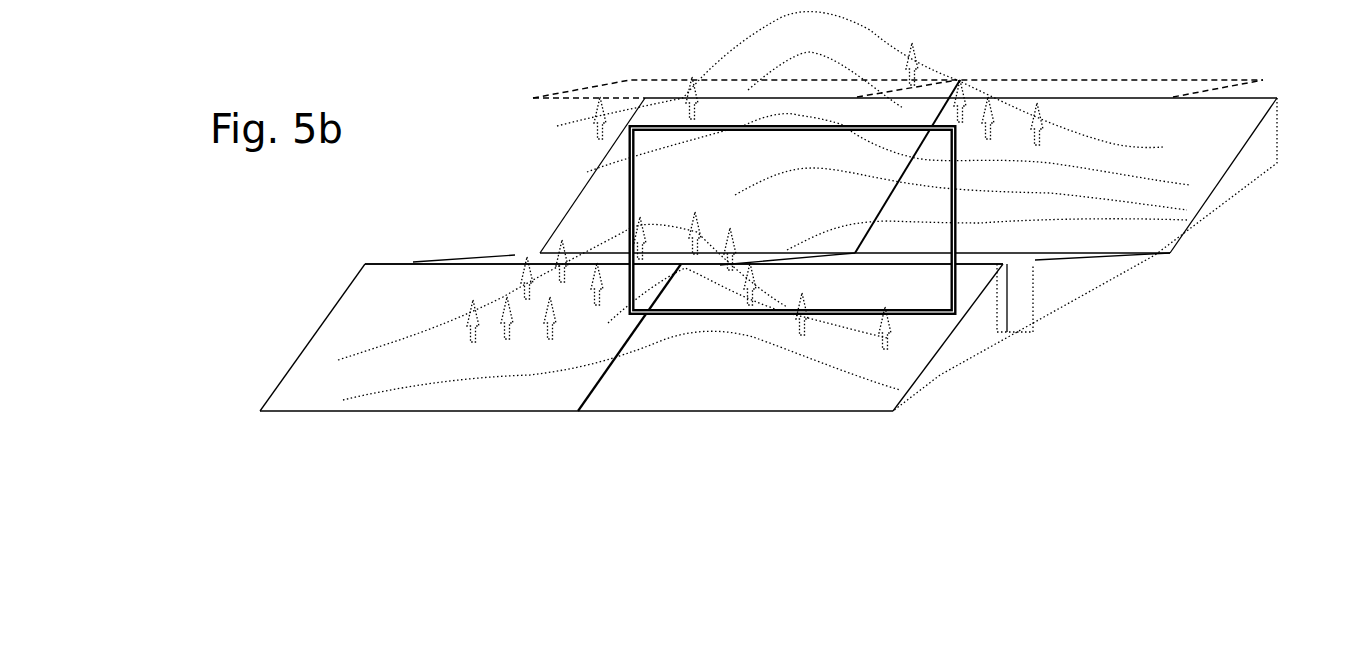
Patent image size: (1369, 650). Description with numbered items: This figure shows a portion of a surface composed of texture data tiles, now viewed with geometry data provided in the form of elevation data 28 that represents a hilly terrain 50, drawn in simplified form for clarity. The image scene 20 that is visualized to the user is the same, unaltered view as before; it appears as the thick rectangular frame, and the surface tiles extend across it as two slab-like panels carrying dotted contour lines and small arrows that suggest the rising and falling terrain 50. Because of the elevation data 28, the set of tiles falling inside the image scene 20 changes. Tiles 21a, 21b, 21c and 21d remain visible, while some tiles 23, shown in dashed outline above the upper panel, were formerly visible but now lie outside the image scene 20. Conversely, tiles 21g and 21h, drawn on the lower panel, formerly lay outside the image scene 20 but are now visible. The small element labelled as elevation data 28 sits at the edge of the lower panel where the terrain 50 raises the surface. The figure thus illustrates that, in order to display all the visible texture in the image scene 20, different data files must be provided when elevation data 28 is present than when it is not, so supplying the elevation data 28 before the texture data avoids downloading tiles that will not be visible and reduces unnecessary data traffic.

The image scene 20 is at (685, 315).
The texture data tile 21a is at (513, 257).
The texture data tile 21b is at (1035, 260).
The texture data tile 21c is at (583, 228).
The texture data tile 21d is at (1208, 172).
The texture data tile 21g is at (310, 375).
The texture data tile 21h is at (925, 337).
The tiles outside the image scene 23 is at (655, 90).
The elevation data 28 is at (1007, 298).
The hilly terrain 50 is at (888, 42).